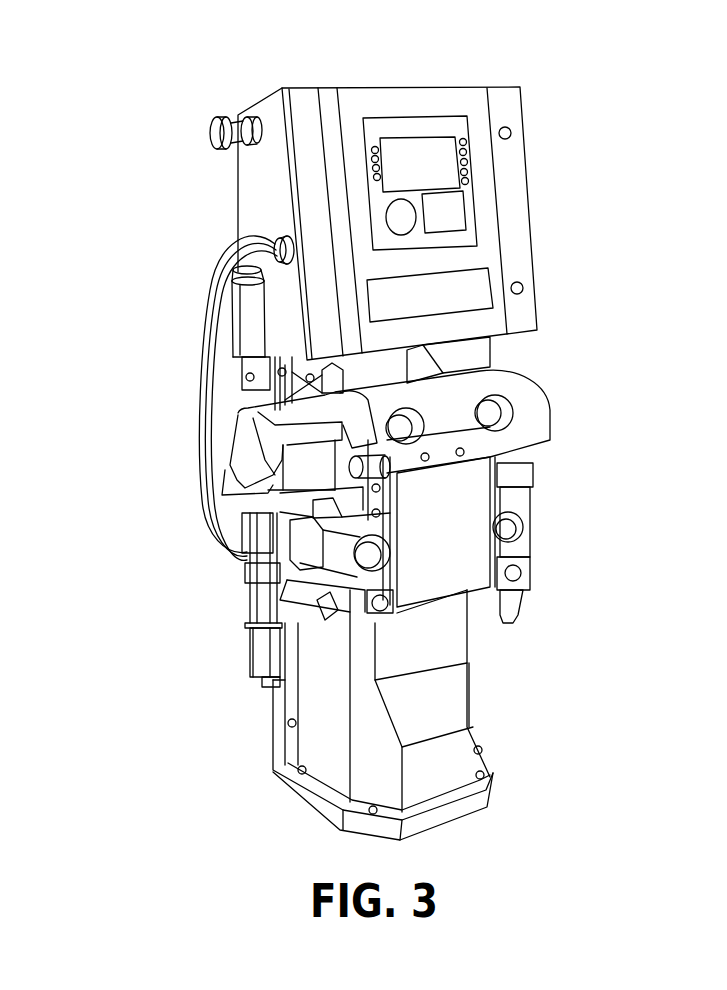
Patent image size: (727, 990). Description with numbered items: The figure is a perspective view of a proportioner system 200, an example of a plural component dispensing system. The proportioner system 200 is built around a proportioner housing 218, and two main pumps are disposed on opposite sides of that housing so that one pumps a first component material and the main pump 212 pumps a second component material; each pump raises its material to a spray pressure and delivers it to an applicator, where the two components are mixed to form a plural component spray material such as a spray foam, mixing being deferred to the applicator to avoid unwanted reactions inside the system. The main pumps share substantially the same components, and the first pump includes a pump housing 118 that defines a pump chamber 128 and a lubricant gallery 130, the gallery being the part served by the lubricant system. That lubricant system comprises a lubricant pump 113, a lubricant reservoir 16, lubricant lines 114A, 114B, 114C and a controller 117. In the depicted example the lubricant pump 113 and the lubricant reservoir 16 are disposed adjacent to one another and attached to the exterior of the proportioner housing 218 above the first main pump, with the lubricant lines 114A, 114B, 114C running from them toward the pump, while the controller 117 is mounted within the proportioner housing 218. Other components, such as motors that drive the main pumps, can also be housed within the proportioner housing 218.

The proportioner system 200 is at (108, 107).
The proportioner housing 218 is at (518, 245).
The controller 117 is at (470, 207).
The lubricant pump 113 is at (280, 233).
The lubricant line 114A is at (276, 244).
The lubricant line 114B is at (235, 246).
The lubricant line 114C is at (210, 348).
The lubricant reservoir 16 is at (248, 303).
The main pump 212 is at (562, 519).
The lubricant gallery 130 is at (247, 558).
The pump housing 118 is at (248, 607).
The pump chamber 128 is at (248, 613).